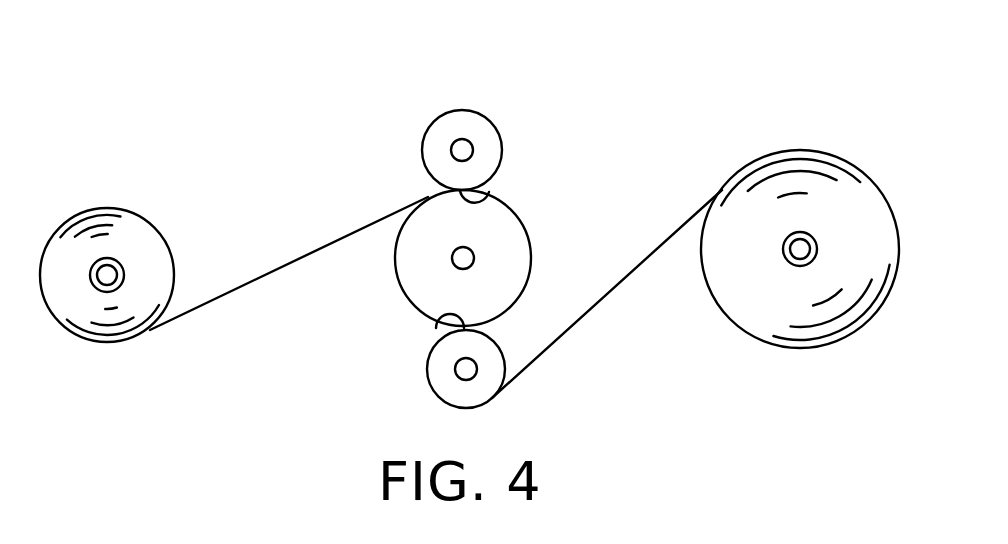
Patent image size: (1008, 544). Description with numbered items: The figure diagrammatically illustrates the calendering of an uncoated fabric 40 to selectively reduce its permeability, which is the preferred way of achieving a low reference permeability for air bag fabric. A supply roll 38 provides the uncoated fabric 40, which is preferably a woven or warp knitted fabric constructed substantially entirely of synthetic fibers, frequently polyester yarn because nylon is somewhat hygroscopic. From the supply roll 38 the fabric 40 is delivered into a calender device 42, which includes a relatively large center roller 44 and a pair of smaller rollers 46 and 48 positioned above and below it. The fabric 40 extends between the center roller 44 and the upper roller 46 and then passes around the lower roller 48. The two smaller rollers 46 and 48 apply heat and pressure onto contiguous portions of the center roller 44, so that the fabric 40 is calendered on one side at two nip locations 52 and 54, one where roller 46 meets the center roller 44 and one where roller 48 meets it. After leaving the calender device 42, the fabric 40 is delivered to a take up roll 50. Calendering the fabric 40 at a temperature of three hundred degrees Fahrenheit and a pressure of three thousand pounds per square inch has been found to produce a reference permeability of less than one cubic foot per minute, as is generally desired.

The supply roll 38 is at (125, 210).
The uncoated fabric 40 is at (266, 275).
The calender device 42 is at (579, 207).
The center roller 44 is at (395, 260).
The roller 46 is at (447, 113).
The roller 48 is at (504, 354).
The take up roll 50 is at (857, 167).
The nip location 52 is at (487, 197).
The nip location 54 is at (442, 327).